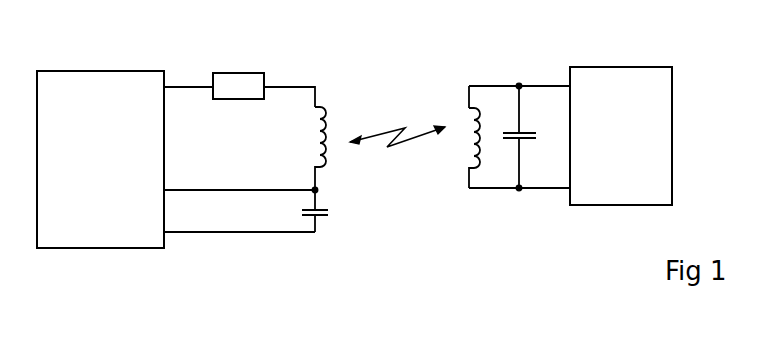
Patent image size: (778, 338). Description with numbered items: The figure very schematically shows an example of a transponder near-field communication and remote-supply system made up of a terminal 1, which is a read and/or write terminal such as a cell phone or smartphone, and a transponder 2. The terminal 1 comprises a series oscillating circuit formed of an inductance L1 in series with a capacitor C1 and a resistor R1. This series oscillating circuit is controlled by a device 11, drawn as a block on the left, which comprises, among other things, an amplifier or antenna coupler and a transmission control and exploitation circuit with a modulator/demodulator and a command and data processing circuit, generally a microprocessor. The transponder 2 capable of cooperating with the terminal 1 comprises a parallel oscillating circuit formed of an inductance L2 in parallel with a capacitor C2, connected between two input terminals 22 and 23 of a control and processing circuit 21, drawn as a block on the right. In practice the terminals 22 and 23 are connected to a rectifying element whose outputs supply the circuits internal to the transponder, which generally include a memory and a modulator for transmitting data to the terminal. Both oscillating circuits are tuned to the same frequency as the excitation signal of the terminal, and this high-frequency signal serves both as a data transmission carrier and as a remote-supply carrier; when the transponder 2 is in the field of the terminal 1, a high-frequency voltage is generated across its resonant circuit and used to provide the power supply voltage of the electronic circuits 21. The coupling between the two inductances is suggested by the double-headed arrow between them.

The terminal 1 is at (203, 259).
The device 11 is at (103, 70).
The resistor R1 is at (238, 75).
The inductance L1 is at (306, 150).
The capacitor C1 is at (332, 211).
The transponder 2 is at (543, 262).
The inductance L2 is at (459, 138).
The capacitor C2 is at (526, 137).
The input terminal 22 is at (521, 84).
The input terminal 23 is at (519, 190).
The control and processing circuit 21 is at (620, 66).